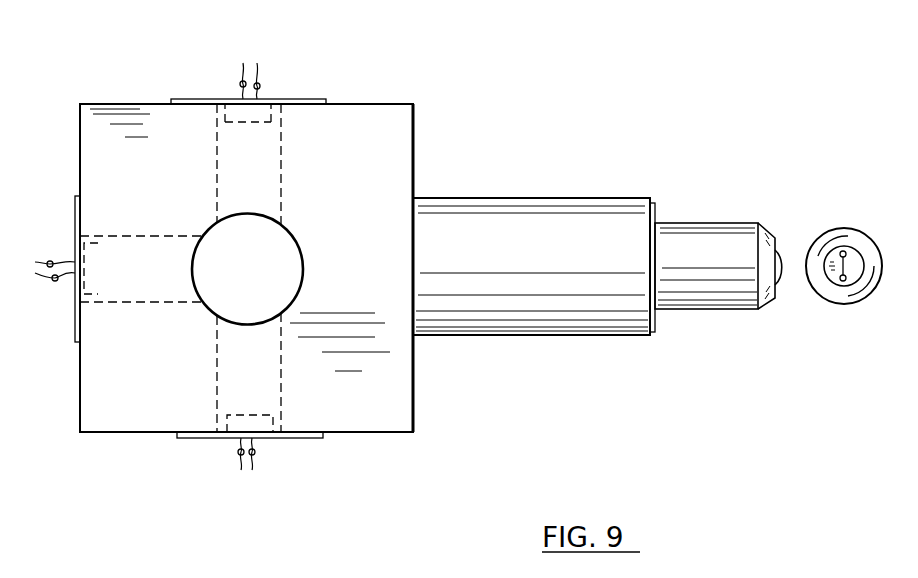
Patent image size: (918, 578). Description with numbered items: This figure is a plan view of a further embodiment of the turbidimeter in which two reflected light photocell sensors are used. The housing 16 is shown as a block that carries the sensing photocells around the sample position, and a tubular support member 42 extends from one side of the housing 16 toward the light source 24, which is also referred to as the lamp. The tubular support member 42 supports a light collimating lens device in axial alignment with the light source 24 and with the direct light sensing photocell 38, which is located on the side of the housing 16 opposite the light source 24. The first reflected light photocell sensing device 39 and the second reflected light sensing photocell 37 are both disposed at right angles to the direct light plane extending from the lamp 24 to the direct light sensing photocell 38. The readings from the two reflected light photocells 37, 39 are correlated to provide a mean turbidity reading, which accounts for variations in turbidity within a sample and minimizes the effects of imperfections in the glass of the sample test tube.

The housing 16 is at (395, 388).
The light source 24 is at (845, 228).
The second reflected light sensing photocell 37 is at (262, 422).
The direct light sensing photocell 38 is at (88, 282).
The reflected light photocell sensing device 39 is at (235, 112).
The tubular support member 42 is at (578, 198).